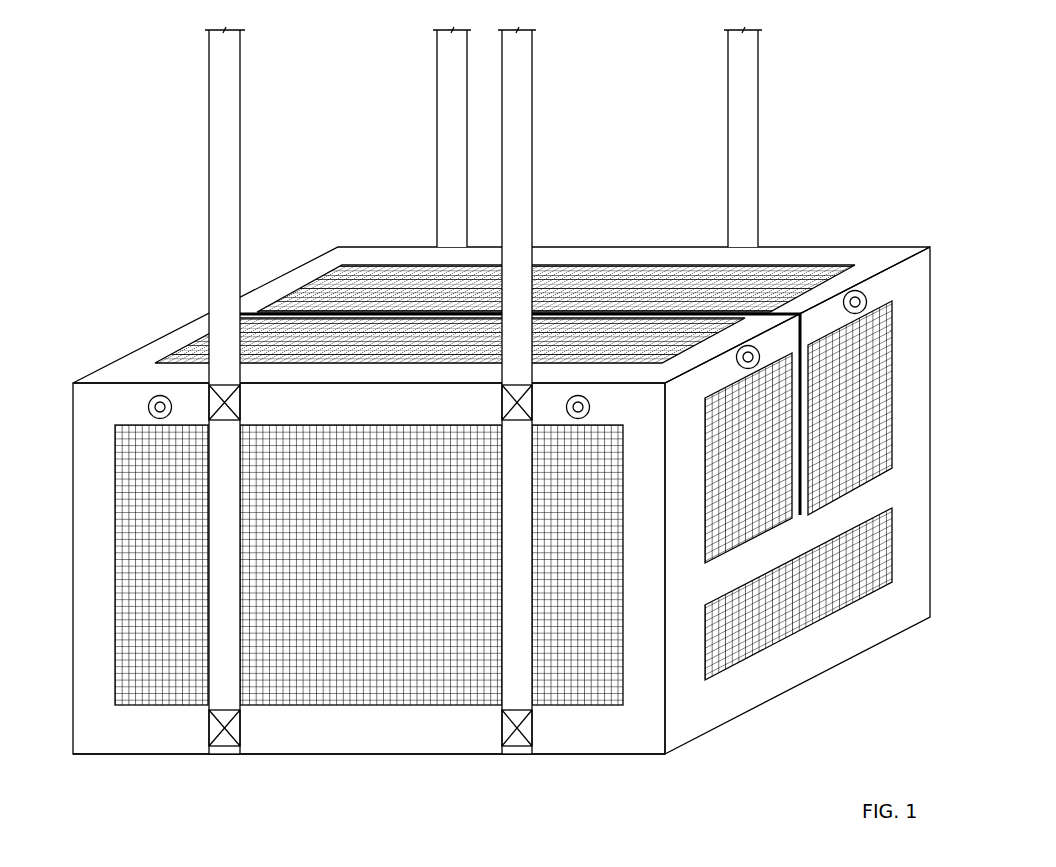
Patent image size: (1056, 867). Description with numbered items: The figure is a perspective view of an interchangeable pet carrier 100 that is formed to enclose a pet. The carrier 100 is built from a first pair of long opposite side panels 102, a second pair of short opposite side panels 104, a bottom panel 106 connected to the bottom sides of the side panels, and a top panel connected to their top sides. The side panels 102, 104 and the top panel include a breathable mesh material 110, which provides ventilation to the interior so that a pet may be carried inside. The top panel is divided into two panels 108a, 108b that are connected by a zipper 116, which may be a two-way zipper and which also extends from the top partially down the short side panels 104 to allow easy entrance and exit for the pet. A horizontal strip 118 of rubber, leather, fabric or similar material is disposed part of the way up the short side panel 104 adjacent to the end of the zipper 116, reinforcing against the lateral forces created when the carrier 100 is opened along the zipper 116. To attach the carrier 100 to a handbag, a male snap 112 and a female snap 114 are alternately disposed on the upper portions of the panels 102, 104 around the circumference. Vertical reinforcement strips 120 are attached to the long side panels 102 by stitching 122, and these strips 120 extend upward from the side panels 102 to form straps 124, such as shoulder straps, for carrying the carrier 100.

The interchangeable pet carrier 100 is at (977, 82).
The long opposite side panels 102 is at (645, 690).
The short opposite side panels 104 is at (912, 375).
The bottom panel 106 is at (578, 756).
The top panel 108a is at (845, 255).
The top panel 108b is at (140, 357).
The breathable mesh material 110 is at (375, 272).
The male snap 112 is at (578, 395).
The female snap 114 is at (150, 400).
The zipper 116 is at (697, 318).
The horizontal strip 118 is at (858, 512).
The vertical reinforcement strips 120 is at (208, 680).
The stitching 122 is at (522, 393).
The straps 124 is at (437, 98).